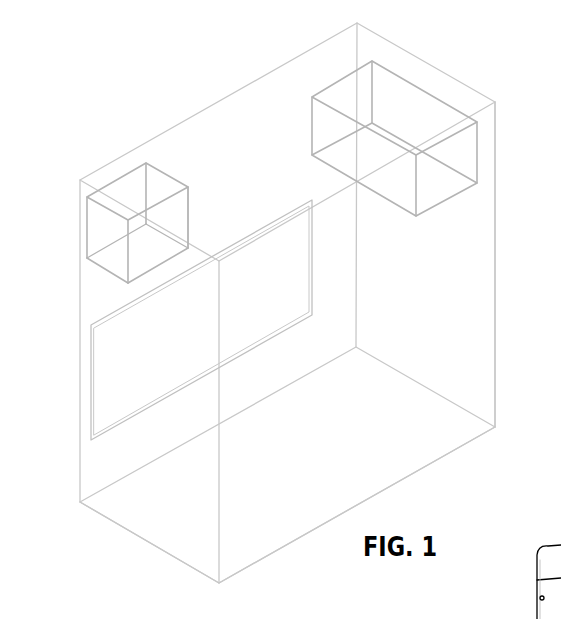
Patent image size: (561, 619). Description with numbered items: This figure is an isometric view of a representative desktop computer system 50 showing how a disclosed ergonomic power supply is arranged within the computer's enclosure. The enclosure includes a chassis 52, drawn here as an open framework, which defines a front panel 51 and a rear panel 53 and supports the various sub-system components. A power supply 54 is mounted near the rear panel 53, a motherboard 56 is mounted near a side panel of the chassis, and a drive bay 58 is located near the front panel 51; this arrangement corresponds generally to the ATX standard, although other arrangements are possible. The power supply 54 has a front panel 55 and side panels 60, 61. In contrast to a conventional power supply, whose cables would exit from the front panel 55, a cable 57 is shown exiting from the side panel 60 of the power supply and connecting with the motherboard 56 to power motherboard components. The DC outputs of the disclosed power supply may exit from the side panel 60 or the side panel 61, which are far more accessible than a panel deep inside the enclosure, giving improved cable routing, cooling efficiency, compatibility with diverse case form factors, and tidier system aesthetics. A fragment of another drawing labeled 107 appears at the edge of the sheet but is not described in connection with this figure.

The desktop computer system 50 is at (127, 70).
The front panel 51 is at (482, 68).
The chassis 52 is at (495, 265).
The rear panel 53 is at (125, 512).
The power supply 54 is at (100, 265).
The front panel of the power supply 55 is at (199, 183).
The motherboard 56 is at (90, 352).
The cable 57 is at (157, 248).
The drive bay 58 is at (417, 191).
The side panel of the power supply 60 is at (145, 283).
The side panel of the power supply 61 is at (172, 217).
The connector 107 is at (537, 572).